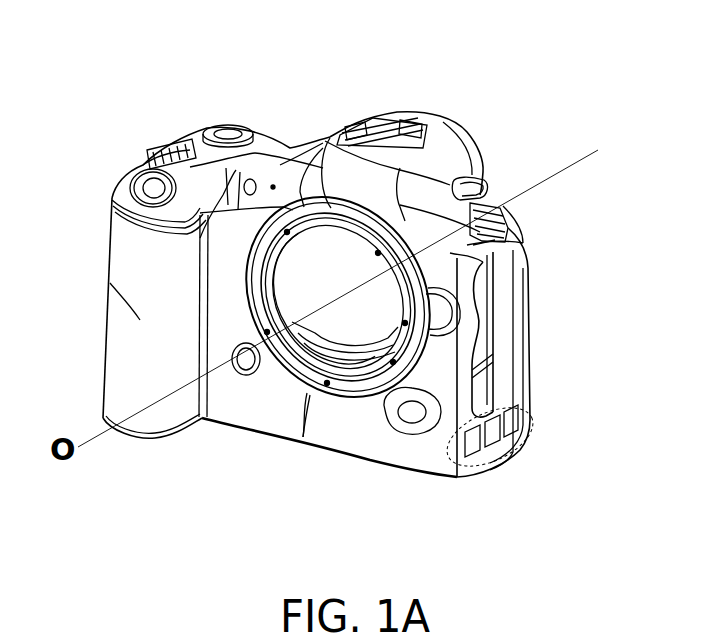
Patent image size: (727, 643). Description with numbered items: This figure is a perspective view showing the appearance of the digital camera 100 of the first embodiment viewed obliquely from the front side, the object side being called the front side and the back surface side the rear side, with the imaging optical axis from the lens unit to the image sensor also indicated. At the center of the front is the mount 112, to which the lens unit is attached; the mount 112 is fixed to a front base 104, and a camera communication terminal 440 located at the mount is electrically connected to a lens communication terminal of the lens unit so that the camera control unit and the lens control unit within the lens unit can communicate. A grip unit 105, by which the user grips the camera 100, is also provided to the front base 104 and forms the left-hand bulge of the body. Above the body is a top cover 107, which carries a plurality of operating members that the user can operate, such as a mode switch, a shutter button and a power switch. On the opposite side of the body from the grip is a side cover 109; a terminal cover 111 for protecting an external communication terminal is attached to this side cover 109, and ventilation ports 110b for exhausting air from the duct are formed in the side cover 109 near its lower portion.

The camera 100 is at (463, 98).
The front base 104 is at (265, 413).
The grip unit 105 is at (95, 299).
The top cover 107 is at (322, 132).
The side cover 109 is at (502, 382).
The ventilation ports 110b is at (472, 463).
The terminal cover 111 is at (486, 297).
The mount 112 is at (303, 432).
The camera communication terminal 440 is at (355, 413).